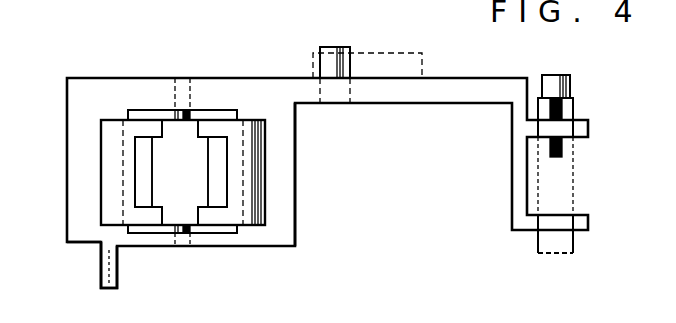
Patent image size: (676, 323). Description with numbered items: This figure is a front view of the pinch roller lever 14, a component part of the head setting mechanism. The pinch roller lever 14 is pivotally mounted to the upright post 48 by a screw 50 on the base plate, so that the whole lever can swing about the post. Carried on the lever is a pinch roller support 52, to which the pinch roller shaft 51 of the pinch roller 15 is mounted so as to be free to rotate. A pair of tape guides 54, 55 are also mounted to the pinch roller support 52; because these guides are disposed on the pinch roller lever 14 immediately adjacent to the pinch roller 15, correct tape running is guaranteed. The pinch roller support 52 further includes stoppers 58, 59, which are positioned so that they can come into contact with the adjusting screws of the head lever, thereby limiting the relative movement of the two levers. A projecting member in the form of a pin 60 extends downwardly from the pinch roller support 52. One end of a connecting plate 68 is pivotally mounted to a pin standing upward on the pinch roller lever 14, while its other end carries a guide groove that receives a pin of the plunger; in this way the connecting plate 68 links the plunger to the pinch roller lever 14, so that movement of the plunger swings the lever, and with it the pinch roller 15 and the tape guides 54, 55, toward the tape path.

The pinch roller lever 14 is at (64, 178).
The pinch roller 15 is at (173, 210).
The upright post 48 is at (560, 197).
The screw 50 is at (573, 83).
The pinch roller shaft 51 is at (190, 97).
The pinch roller support 52 is at (218, 246).
The tape guide 54 is at (208, 186).
The tape guide 55 is at (146, 160).
The stopper 58 is at (296, 188).
The stopper 59 is at (78, 230).
The pin 60 is at (106, 289).
The connecting plate 68 is at (398, 62).